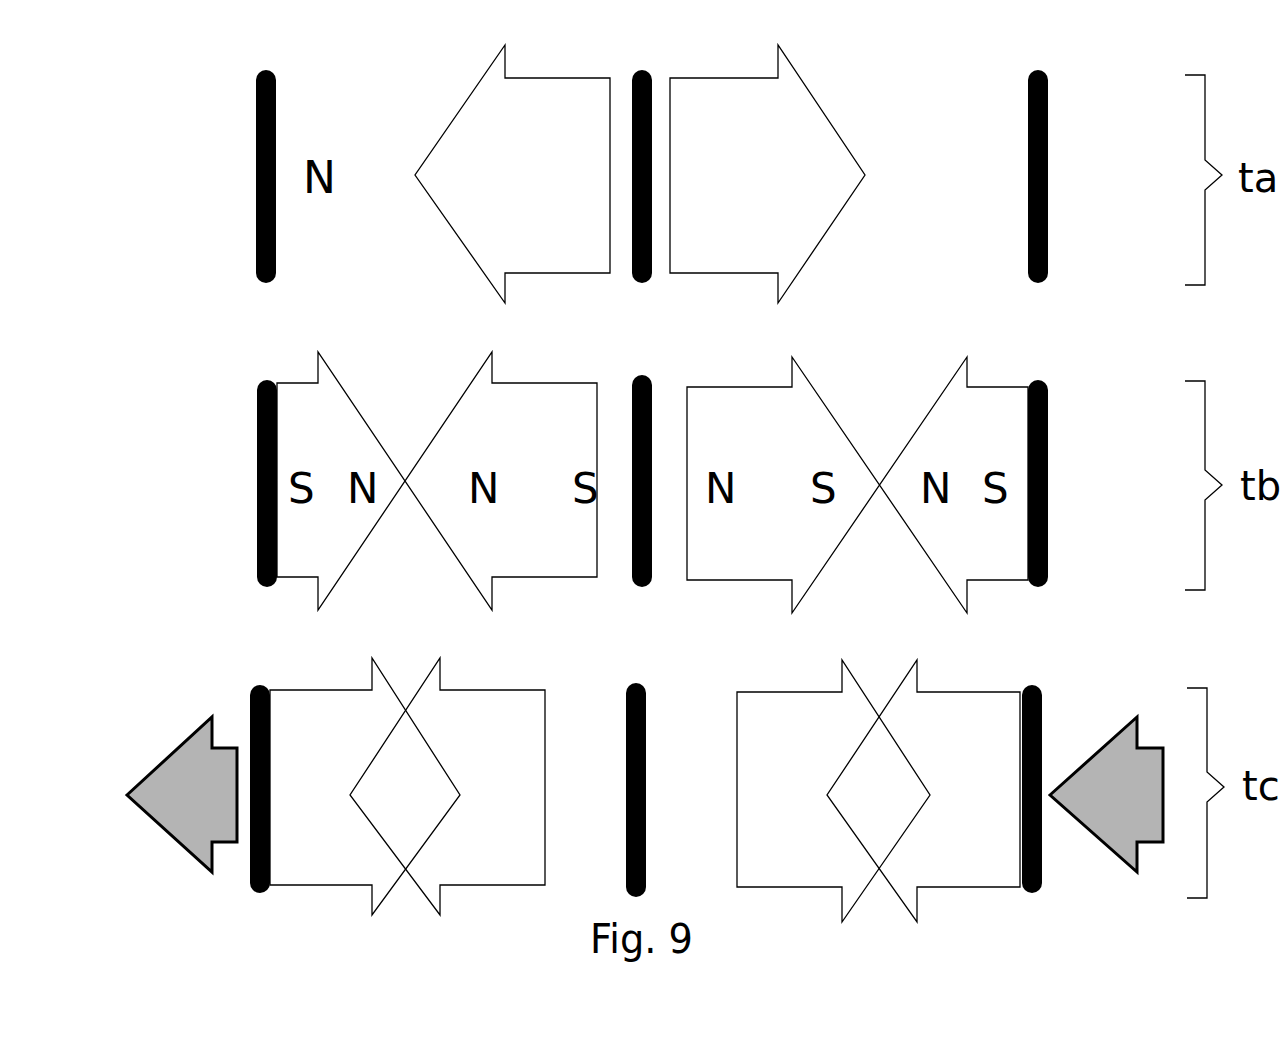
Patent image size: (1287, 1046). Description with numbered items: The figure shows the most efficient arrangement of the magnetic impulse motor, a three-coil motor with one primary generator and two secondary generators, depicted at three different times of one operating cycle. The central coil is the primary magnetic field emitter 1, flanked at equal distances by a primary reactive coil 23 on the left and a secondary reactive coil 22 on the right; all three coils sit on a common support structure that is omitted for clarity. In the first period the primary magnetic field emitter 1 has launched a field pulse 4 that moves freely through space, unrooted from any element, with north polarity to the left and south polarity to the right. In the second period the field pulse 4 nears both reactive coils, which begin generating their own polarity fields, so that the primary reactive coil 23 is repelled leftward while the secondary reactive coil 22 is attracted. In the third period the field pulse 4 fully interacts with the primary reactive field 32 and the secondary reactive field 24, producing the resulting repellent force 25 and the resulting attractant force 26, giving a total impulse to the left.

The primary magnetic field emitter 1 is at (635, 469).
The field pulse 4 is at (652, 483).
The secondary reactive coil 22 is at (1016, 479).
The primary reactive coil 23 is at (238, 481).
The secondary reactive field 24 is at (923, 791).
The resulting repellent force 25 is at (182, 794).
The resulting attractant force 26 is at (1106, 794).
The primary reactive field 32 is at (365, 786).